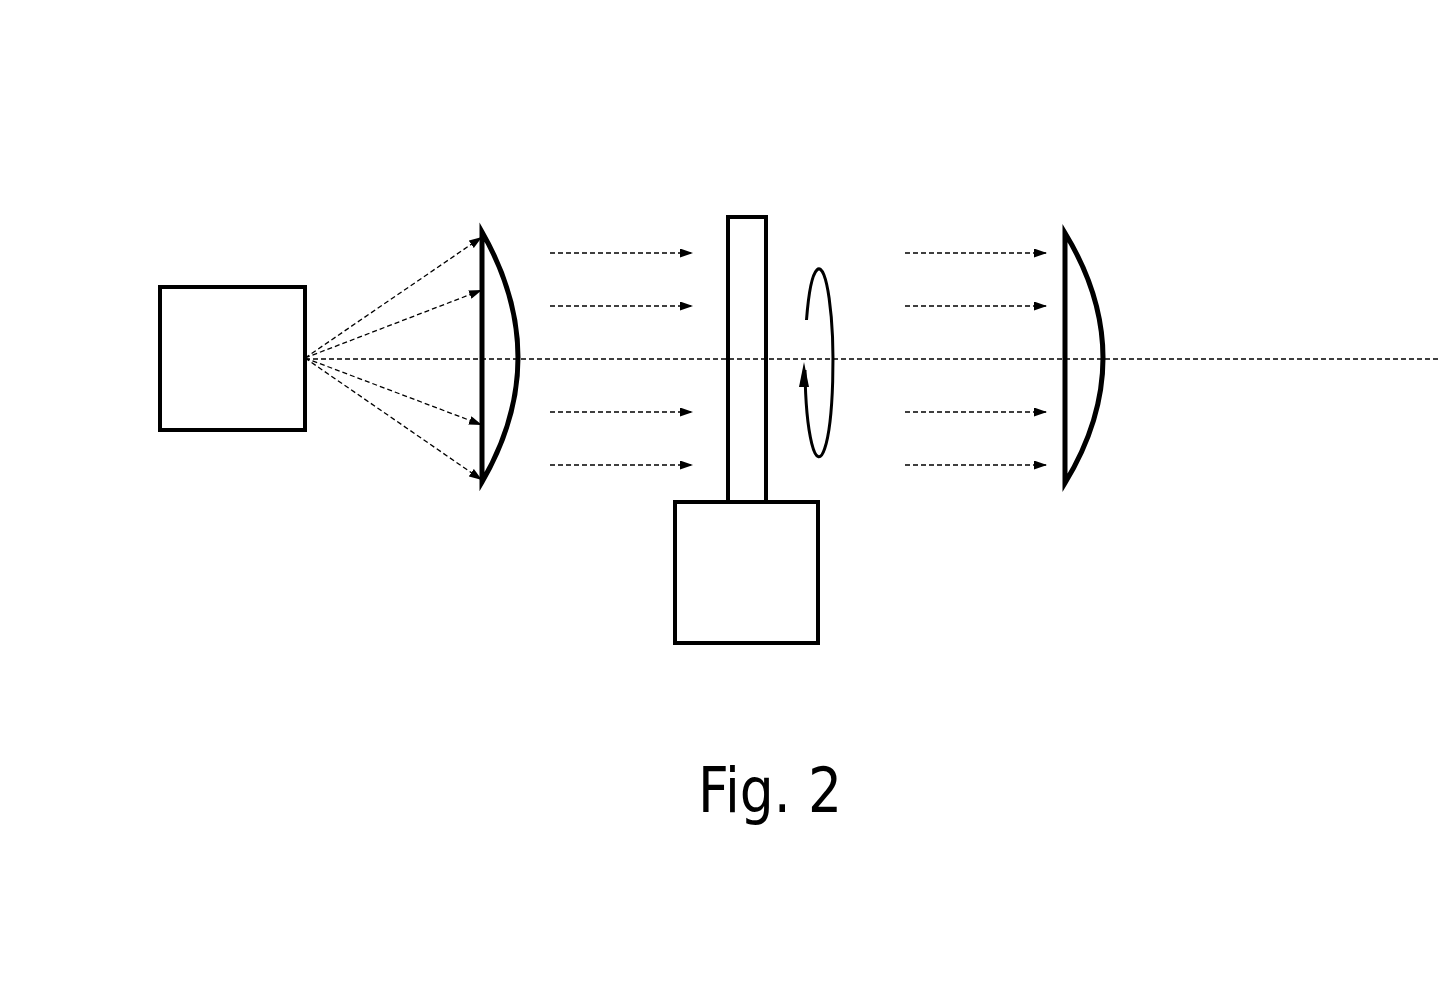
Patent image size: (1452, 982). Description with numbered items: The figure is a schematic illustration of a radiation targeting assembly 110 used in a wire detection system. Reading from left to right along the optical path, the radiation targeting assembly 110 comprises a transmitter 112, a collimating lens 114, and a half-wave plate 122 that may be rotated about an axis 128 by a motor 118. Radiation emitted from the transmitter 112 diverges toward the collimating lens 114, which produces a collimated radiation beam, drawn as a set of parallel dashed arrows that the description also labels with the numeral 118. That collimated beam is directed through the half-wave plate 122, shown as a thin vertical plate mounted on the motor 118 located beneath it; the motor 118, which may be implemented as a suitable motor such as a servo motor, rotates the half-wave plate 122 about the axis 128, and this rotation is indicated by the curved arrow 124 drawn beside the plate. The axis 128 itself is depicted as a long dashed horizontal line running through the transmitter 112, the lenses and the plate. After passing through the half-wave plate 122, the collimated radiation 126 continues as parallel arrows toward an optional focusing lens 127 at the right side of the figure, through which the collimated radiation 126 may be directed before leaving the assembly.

The radiation targeting assembly 110 is at (178, 102).
The transmitter 112 is at (215, 379).
The collimating lens 114 is at (482, 232).
The motor 118 is at (605, 253).
The half-wave plate 122 is at (746, 217).
The arrow 124 is at (815, 273).
The collimated radiation 126 is at (958, 253).
The focusing lens 127 is at (1065, 233).
The axis 128 is at (1237, 359).